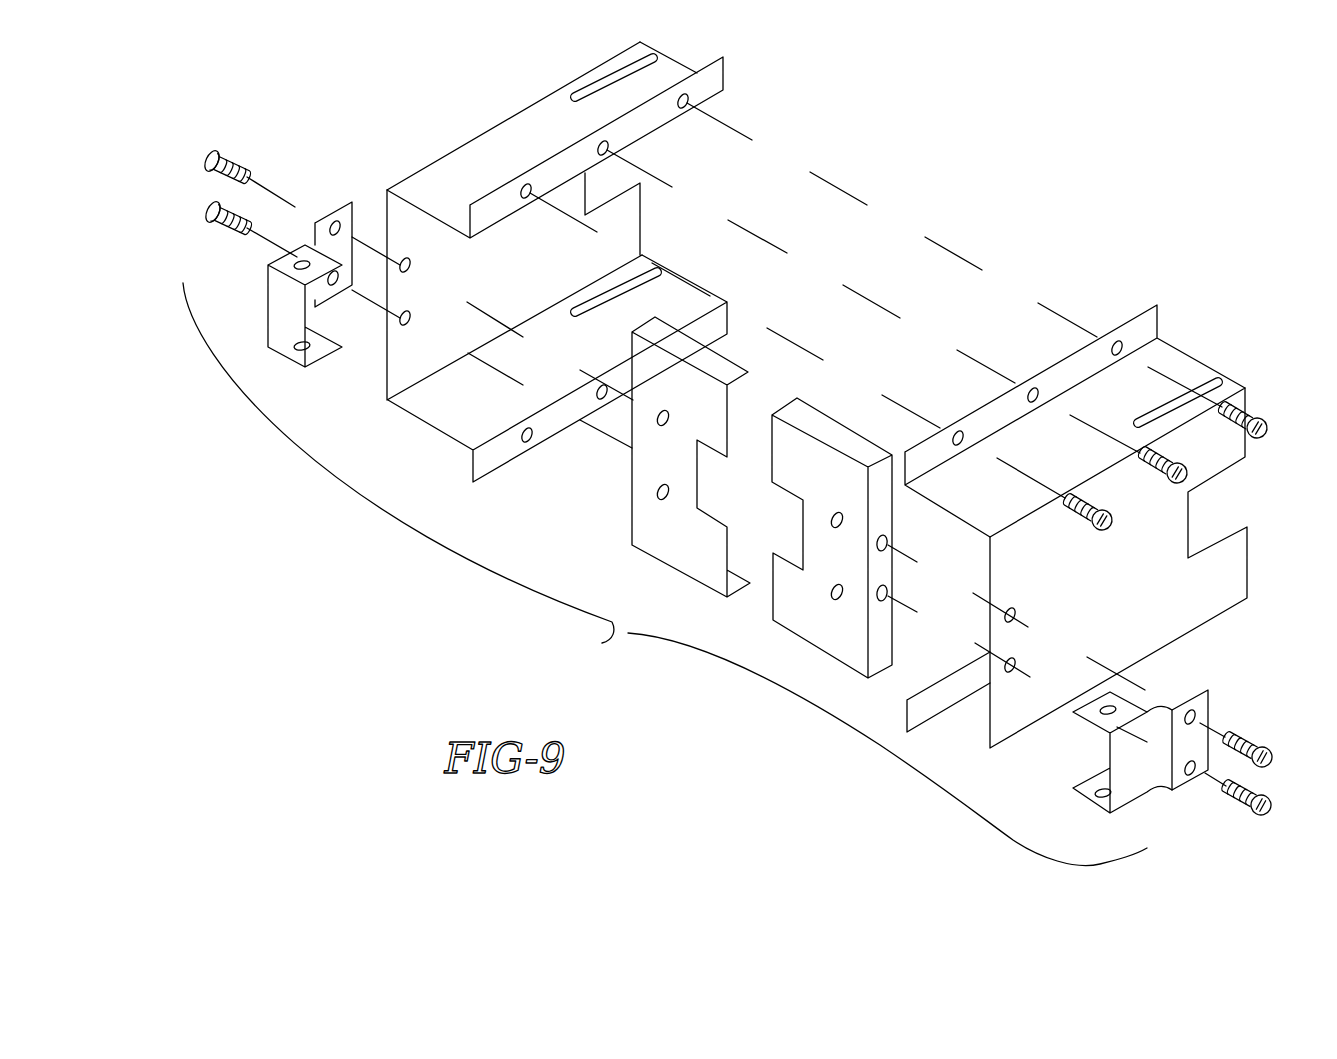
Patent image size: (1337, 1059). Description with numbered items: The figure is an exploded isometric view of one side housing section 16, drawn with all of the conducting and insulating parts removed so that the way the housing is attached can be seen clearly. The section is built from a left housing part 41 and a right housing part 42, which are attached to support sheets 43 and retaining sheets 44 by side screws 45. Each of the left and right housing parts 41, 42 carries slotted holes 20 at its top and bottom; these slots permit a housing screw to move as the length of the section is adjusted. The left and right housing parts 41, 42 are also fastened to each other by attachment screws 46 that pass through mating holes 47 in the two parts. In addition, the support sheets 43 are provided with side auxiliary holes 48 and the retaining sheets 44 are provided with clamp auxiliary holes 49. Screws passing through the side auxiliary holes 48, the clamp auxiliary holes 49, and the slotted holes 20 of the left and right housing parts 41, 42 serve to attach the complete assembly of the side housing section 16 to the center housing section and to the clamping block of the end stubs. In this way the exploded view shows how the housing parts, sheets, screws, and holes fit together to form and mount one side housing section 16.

The side housing section 16 is at (665, 574).
The slotted holes 20 is at (607, 80).
The left housing part 41 is at (493, 162).
The right housing part 42 is at (1163, 353).
The support sheets 43 is at (710, 572).
The retaining sheets 44 is at (275, 322).
The side screws 45 is at (210, 212).
The attachment screws 46 is at (1265, 421).
The mating holes 47 is at (1119, 356).
The side auxiliary holes 48 is at (833, 590).
The clamp auxiliary holes 49 is at (295, 264).